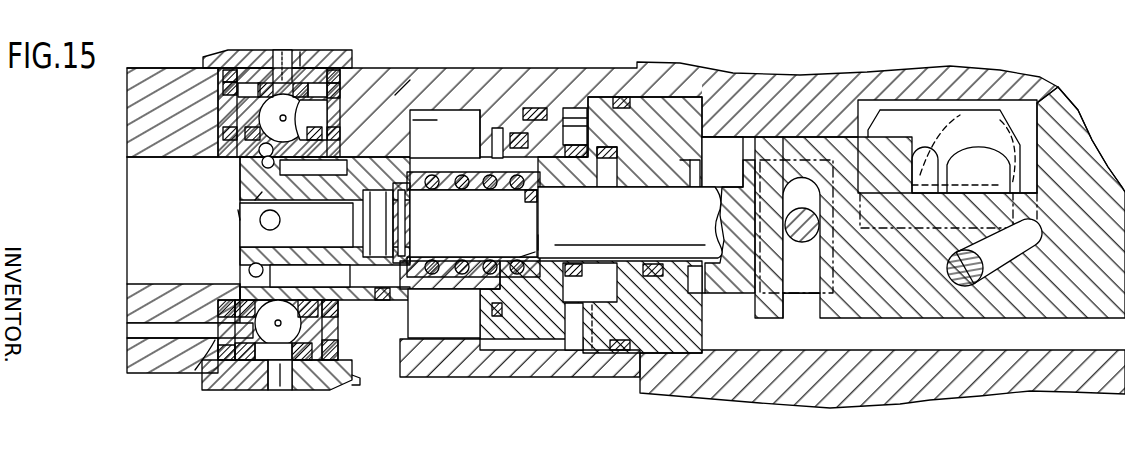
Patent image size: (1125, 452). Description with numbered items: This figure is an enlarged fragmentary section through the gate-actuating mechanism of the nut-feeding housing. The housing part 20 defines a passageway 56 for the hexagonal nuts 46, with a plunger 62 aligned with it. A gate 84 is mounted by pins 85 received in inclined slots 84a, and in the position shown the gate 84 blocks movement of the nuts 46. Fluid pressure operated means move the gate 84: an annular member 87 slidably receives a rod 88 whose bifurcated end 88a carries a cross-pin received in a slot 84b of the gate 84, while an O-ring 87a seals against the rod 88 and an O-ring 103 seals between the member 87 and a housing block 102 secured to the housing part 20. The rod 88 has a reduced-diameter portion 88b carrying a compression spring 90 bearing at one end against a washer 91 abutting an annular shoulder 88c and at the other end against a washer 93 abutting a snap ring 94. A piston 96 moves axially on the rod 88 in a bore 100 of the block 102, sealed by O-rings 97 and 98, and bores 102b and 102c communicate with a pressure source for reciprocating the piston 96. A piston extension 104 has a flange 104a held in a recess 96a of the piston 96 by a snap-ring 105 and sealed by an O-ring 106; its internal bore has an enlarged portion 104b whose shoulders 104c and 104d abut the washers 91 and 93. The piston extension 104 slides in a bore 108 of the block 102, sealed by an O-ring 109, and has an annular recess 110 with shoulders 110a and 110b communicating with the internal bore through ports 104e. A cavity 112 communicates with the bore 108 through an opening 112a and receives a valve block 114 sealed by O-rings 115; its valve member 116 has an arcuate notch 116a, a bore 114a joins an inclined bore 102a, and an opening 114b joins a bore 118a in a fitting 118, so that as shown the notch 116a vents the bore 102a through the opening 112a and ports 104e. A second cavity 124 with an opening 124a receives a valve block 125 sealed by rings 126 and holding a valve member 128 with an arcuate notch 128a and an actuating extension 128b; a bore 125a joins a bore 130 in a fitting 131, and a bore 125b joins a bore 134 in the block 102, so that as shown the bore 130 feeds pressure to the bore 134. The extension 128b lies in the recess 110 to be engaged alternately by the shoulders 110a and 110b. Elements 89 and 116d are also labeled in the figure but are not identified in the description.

The housing part 20 is at (698, 405).
The hexagonal nuts 46 is at (978, 118).
The passageway 56 is at (1040, 112).
The plunger 62 is at (935, 103).
The gate plate 84 is at (935, 318).
The inclined slots 84a is at (1040, 245).
The slot 84b is at (808, 318).
The pins 85 is at (994, 252).
The annular member 87 is at (688, 107).
The O-ring 87a is at (655, 190).
The rod 88 is at (664, 242).
The bifurcated end 88a is at (753, 135).
The reduced in diameter portion 88b is at (487, 229).
The annular shoulder 88c is at (538, 238).
The pin 89 is at (805, 250).
The compression spring 90 is at (462, 155).
The washer 91 is at (515, 200).
The washer 93 is at (468, 251).
The snap ring 94 is at (467, 197).
The piston 96 is at (560, 107).
The recess 96a is at (475, 310).
The O-ring 97 is at (576, 188).
The O-ring 98 is at (538, 110).
The bore 100 is at (428, 108).
The housing block 102 is at (527, 68).
The inclined bore 102a is at (410, 78).
The bore 102b is at (598, 383).
The bore 102c is at (405, 383).
The O-ring 103 is at (620, 95).
The piston extension 104 is at (248, 190).
The flange 104a is at (655, 149).
The enlarged portion 104b is at (530, 240).
The annular shoulder 104c is at (530, 283).
The annular shoulder 104d is at (410, 275).
The ports 104e is at (282, 220).
The snap-ring 105 is at (448, 121).
The O-ring 106 is at (573, 132).
The bore 108 is at (170, 189).
The O-ring 109 is at (385, 292).
The annular recess 110 is at (306, 277).
The annular shoulder 110a is at (292, 172).
The annular shoulder 110b is at (240, 174).
The cavity 112 is at (233, 112).
The opening 112a is at (258, 200).
The valve block 114 is at (225, 82).
The bore 114a is at (338, 80).
The opening 114b is at (297, 60).
The O-rings 115 is at (222, 138).
The valve member 116 is at (254, 55).
The arcuate notch 116a is at (318, 124).
The detent seat 116d is at (237, 217).
The fitting 118 is at (225, 57).
The bore 118a is at (283, 50).
The cavity 124 is at (330, 328).
The opening 124a is at (152, 312).
The valve block 125 is at (330, 352).
The bore 125a is at (296, 392).
The bore 125b is at (215, 342).
The sealing rings 126 is at (195, 370).
The valve member 128 is at (262, 362).
The arcuate notch 128a is at (228, 388).
The valve actuating extension 128b is at (240, 270).
The bore 130 is at (278, 390).
The fitting 131 is at (360, 385).
The bore 134 is at (135, 333).